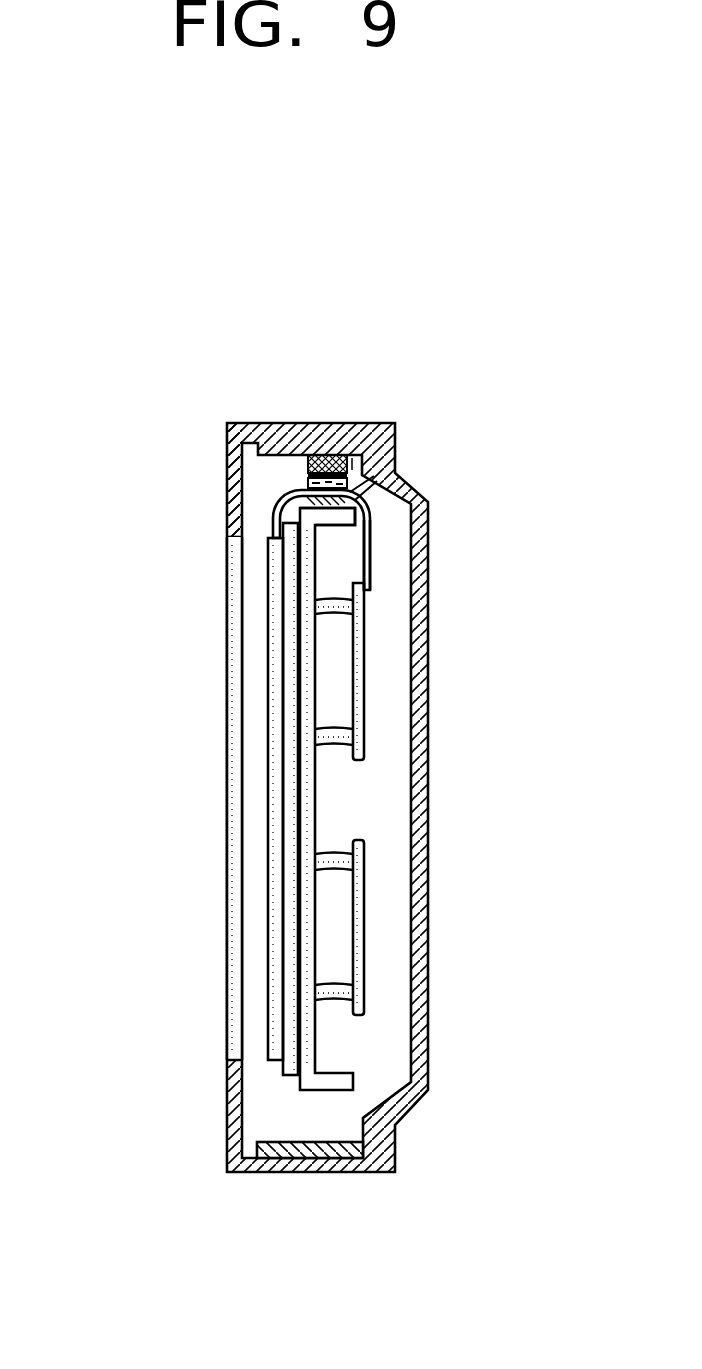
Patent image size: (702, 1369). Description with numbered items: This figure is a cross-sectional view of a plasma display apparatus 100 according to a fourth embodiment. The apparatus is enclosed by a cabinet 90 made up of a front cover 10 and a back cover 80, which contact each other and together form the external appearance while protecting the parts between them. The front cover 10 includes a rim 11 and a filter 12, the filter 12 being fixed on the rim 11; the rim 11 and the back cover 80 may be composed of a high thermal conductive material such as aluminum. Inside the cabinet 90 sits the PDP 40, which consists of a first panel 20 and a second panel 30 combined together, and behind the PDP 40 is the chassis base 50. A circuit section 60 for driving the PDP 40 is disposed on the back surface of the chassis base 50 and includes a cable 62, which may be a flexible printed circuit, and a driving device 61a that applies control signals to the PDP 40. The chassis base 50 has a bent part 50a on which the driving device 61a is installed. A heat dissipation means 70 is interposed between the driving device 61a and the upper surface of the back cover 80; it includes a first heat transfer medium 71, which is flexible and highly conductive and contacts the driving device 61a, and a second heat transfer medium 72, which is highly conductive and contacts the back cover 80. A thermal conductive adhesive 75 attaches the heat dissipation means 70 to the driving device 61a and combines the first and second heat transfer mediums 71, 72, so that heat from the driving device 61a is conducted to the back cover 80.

The plasma display apparatus 100 is at (185, 1122).
The cabinet 90 is at (223, 398).
The front cover 10 is at (123, 507).
The rim 11 is at (232, 505).
The filter 12 is at (237, 578).
The heat dissipation means 70 is at (347, 357).
The first heat transfer medium 71 is at (310, 455).
The second heat transfer medium 72 is at (333, 473).
The thermal conductive adhesive 75 is at (393, 442).
The PDP 40 is at (123, 823).
The first panel 20 is at (273, 828).
The second panel 30 is at (290, 898).
The chassis base 50 is at (307, 992).
The bent part 50a is at (357, 520).
The circuit section 60 is at (365, 683).
The driving device 61a is at (373, 484).
The cable 62 is at (370, 556).
The back cover 80 is at (298, 1150).